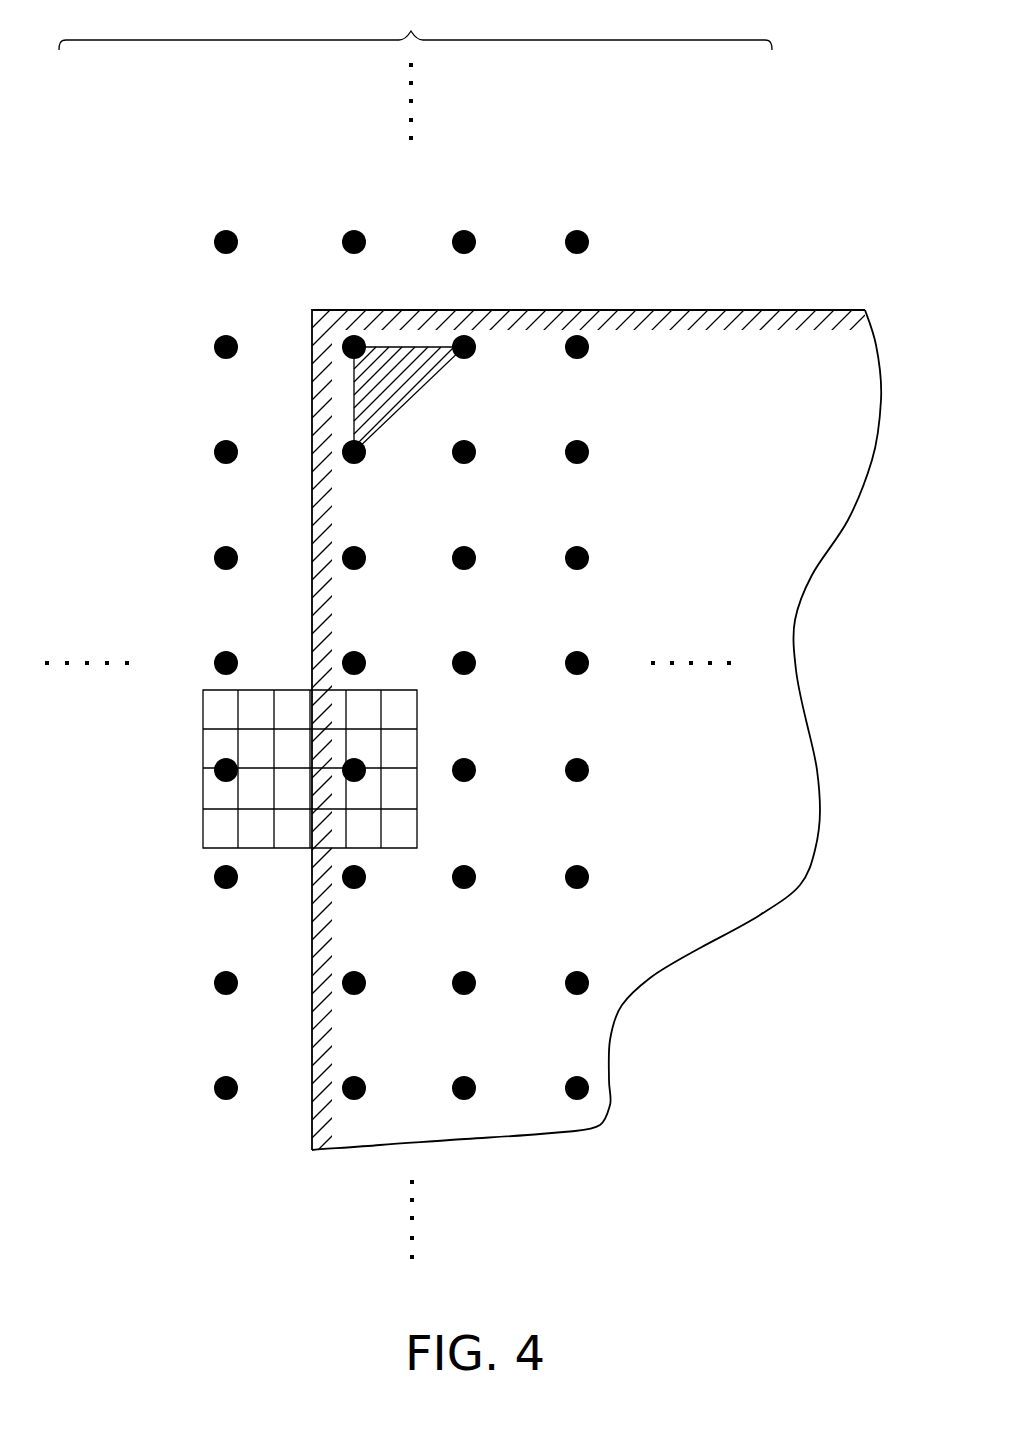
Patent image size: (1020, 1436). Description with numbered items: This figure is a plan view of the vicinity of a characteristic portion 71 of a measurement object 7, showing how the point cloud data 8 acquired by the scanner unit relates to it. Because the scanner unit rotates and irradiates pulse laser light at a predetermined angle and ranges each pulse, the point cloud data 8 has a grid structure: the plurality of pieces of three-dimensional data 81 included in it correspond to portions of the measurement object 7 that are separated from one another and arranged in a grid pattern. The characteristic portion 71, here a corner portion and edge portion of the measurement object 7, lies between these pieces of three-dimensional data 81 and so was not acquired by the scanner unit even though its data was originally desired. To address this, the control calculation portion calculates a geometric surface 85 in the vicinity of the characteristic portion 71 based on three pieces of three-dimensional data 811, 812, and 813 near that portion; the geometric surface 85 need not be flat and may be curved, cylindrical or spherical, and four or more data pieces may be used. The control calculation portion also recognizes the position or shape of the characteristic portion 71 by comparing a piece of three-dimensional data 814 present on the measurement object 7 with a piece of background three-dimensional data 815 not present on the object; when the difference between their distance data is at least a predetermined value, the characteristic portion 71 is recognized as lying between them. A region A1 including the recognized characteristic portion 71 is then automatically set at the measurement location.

The point cloud data 8 is at (415, 25).
The three-dimensional data 81 is at (220, 232).
The three-dimensional data 811 is at (351, 335).
The three-dimensional data 812 is at (472, 352).
The three-dimensional data 813 is at (348, 455).
The three-dimensional data 814 is at (357, 762).
The background three-dimensional data 815 is at (222, 778).
The geometric surface 85 is at (395, 385).
The measurement object 7 is at (765, 345).
The characteristic portion 71 is at (318, 300).
The region A1 is at (203, 708).